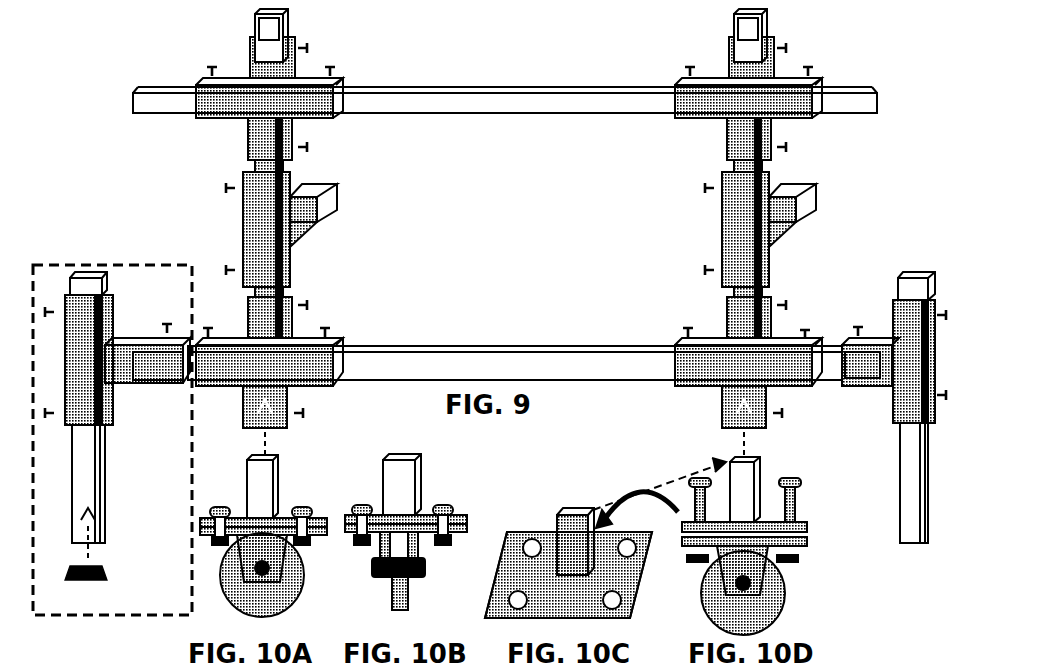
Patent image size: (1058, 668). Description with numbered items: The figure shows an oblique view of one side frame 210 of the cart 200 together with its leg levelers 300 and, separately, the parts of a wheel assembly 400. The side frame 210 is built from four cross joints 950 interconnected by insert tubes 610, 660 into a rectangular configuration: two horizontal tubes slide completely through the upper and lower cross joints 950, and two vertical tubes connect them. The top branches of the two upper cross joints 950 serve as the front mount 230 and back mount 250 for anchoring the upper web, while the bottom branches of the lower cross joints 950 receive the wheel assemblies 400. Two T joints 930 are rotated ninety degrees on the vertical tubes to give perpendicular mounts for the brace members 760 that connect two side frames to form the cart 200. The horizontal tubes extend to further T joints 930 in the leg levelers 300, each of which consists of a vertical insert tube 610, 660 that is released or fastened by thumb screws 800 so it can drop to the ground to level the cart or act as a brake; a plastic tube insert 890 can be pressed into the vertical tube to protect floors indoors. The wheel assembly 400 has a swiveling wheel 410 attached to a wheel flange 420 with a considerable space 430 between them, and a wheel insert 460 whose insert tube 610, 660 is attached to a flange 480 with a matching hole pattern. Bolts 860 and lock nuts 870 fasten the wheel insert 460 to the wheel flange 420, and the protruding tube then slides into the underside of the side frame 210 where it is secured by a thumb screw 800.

In FIG. 9, the cart 200 is at (475, 66).
In FIG. 9, the side frame 210 is at (578, 86).
In FIG. 9, the front mount 230 is at (728, 48).
In FIG. 9, the back mount 250 is at (297, 60).
In FIG. 9, the leg leveler 300 is at (117, 252).
In FIG. 10C, the wheel assembly 400 is at (499, 490).
In FIG. 10A, the wheel 410 is at (290, 555).
In FIG. 10D, the wheel flange 420 is at (808, 540).
In FIG. 10B, the space 430 is at (400, 540).
In FIG. 10C, the wheel insert 460 is at (632, 608).
In FIG. 10C, the flange 480 is at (538, 534).
In FIG. 9, the insert tube 610 is at (840, 346).
In FIG. 10C, the insert tube 610 is at (561, 508).
In FIG. 9, the insert tube 660 is at (898, 292).
In FIG. 10C, the insert tube 660 is at (561, 508).
In FIG. 9, the brace member 760 is at (322, 203).
In FIG. 9, the thumb screw 800 is at (213, 64).
In FIG. 10D, the bolt 860 is at (790, 476).
In FIG. 10D, the lock nut 870 is at (798, 563).
In FIG. 9, the plastic tube insert 890 is at (90, 582).
In FIG. 9, the T joint 930 is at (300, 237).
In FIG. 9, the cross joint 950 is at (247, 136).